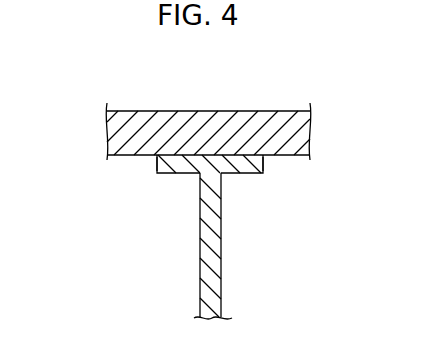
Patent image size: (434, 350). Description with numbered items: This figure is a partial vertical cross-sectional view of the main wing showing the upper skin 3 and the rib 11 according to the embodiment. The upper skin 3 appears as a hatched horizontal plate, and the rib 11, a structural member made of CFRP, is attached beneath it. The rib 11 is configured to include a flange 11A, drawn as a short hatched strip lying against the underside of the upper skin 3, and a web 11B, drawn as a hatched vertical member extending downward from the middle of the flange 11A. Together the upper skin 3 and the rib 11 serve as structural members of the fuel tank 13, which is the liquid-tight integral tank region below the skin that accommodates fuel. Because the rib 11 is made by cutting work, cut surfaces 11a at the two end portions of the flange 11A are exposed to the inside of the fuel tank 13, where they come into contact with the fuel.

The upper skin 3 is at (208, 105).
The rib 11 is at (199, 237).
The flange 11A is at (182, 203).
The web 11B is at (167, 246).
The cut surfaces 11a is at (212, 183).
The fuel tank 13 is at (268, 280).